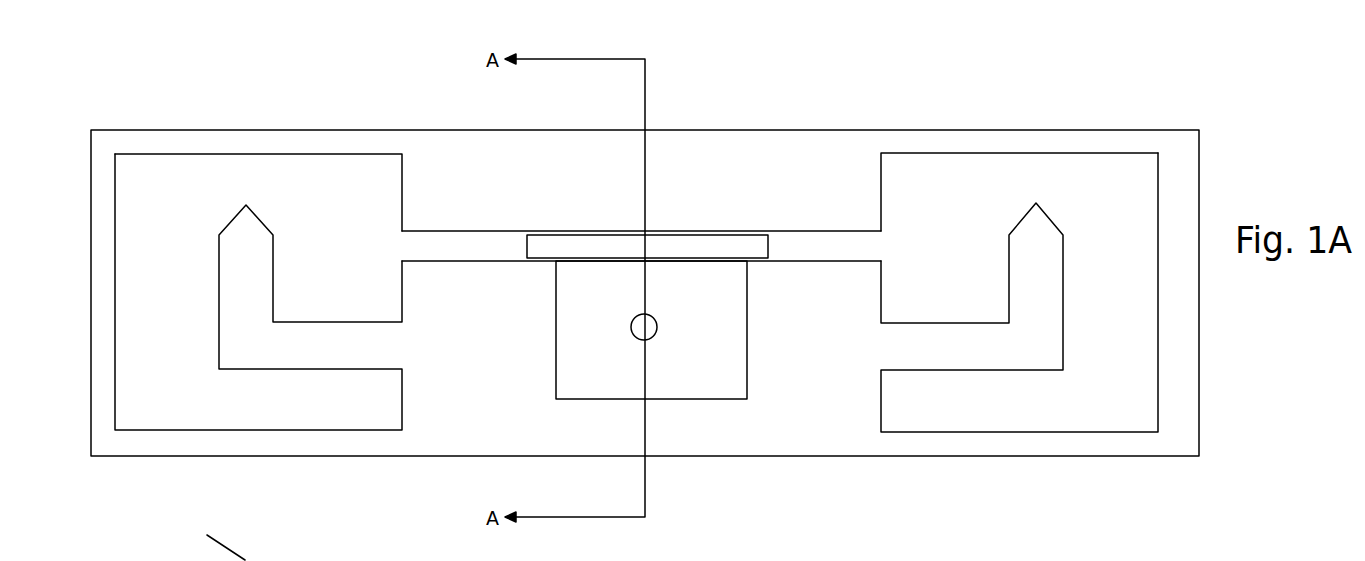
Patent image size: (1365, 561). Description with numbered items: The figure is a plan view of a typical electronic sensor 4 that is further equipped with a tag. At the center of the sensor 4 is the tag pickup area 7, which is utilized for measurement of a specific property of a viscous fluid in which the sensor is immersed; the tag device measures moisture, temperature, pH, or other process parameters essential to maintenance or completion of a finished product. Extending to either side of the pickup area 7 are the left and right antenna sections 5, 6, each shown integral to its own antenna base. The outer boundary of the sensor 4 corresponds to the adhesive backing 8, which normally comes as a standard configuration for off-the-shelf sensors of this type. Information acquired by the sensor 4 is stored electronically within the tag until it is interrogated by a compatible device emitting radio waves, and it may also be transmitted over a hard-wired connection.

The sensor 4 is at (654, 288).
The left antenna section 5 is at (258, 296).
The right antenna section 6 is at (1019, 300).
The tag pickup area 7 is at (655, 318).
The adhesive backing 8 is at (113, 438).